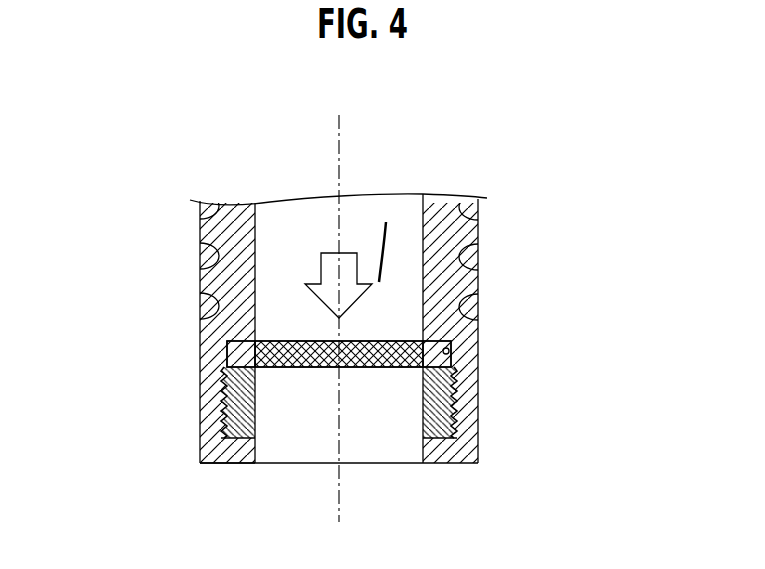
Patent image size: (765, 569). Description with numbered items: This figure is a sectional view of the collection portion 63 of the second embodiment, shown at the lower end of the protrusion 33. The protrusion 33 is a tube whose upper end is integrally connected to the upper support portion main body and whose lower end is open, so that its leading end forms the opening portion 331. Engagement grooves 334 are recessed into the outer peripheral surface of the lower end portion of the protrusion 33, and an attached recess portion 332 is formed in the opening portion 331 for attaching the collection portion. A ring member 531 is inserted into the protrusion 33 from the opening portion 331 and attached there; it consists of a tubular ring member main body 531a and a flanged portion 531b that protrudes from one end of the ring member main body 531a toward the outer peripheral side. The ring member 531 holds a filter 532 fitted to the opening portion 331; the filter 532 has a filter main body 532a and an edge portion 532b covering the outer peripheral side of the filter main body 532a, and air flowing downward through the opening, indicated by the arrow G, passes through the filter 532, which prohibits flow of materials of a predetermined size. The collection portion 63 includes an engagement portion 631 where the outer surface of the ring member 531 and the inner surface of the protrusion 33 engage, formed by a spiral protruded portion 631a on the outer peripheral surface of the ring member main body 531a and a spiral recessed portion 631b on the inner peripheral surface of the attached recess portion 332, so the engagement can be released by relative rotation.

The gas G is at (386, 228).
The protrusion 33 is at (441, 212).
The engagement grooves 334 is at (478, 257).
The filter 532 is at (448, 321).
The filter main body 532a is at (408, 346).
The edge portion 532b is at (451, 345).
The attached recess portion 332 is at (449, 352).
The ring member 531 is at (540, 410).
The ring member main body 531a is at (454, 420).
The flanged portion 531b is at (472, 452).
The engagement portion 631 is at (152, 402).
The spiral protruded portion 631a is at (222, 417).
The spiral recessed portion 631b is at (222, 388).
The collection portion 63 is at (234, 470).
The opening portion 331 is at (296, 465).